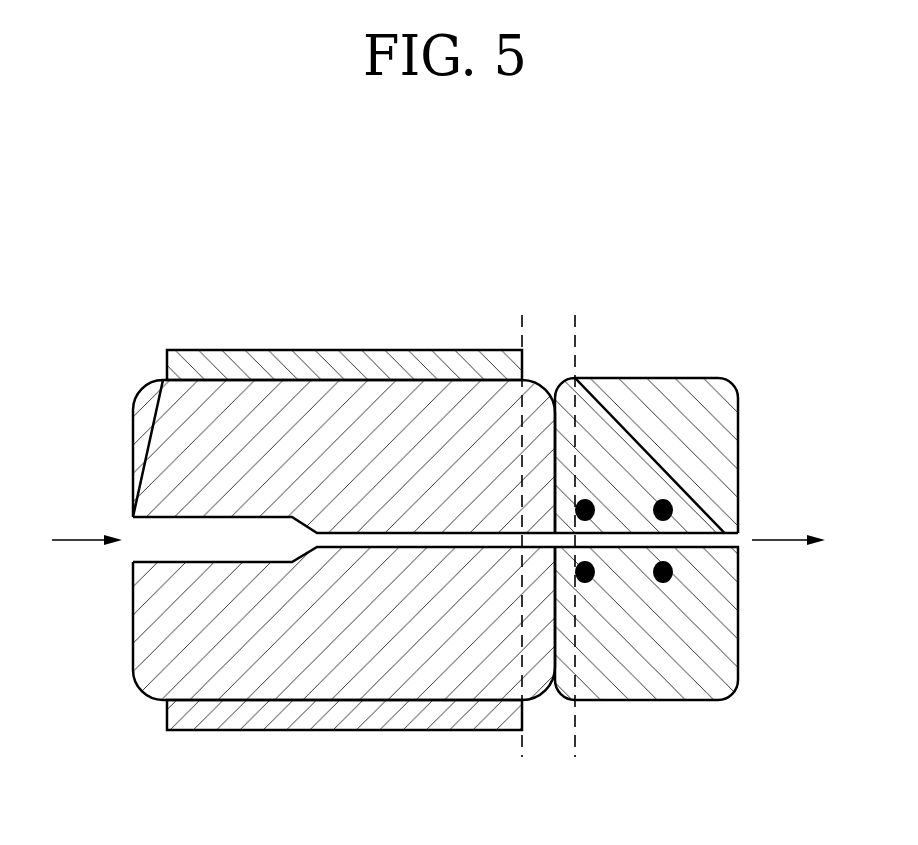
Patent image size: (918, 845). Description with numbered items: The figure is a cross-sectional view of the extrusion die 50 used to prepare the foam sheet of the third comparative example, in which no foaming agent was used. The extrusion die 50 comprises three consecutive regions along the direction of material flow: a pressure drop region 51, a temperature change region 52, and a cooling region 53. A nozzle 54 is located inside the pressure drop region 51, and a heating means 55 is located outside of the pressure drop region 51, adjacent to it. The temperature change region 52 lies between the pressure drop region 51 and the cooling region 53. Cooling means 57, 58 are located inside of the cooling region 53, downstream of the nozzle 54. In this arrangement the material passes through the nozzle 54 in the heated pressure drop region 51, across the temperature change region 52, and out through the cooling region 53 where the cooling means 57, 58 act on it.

The extrusion die 50 is at (460, 230).
The pressure drop region 51 is at (518, 325).
The temperature change region 52 is at (572, 325).
The cooling region 53 is at (738, 325).
The nozzle 54 is at (302, 562).
The heating means 55 is at (383, 718).
The cooling means 57 is at (592, 580).
The cooling means 58 is at (667, 580).